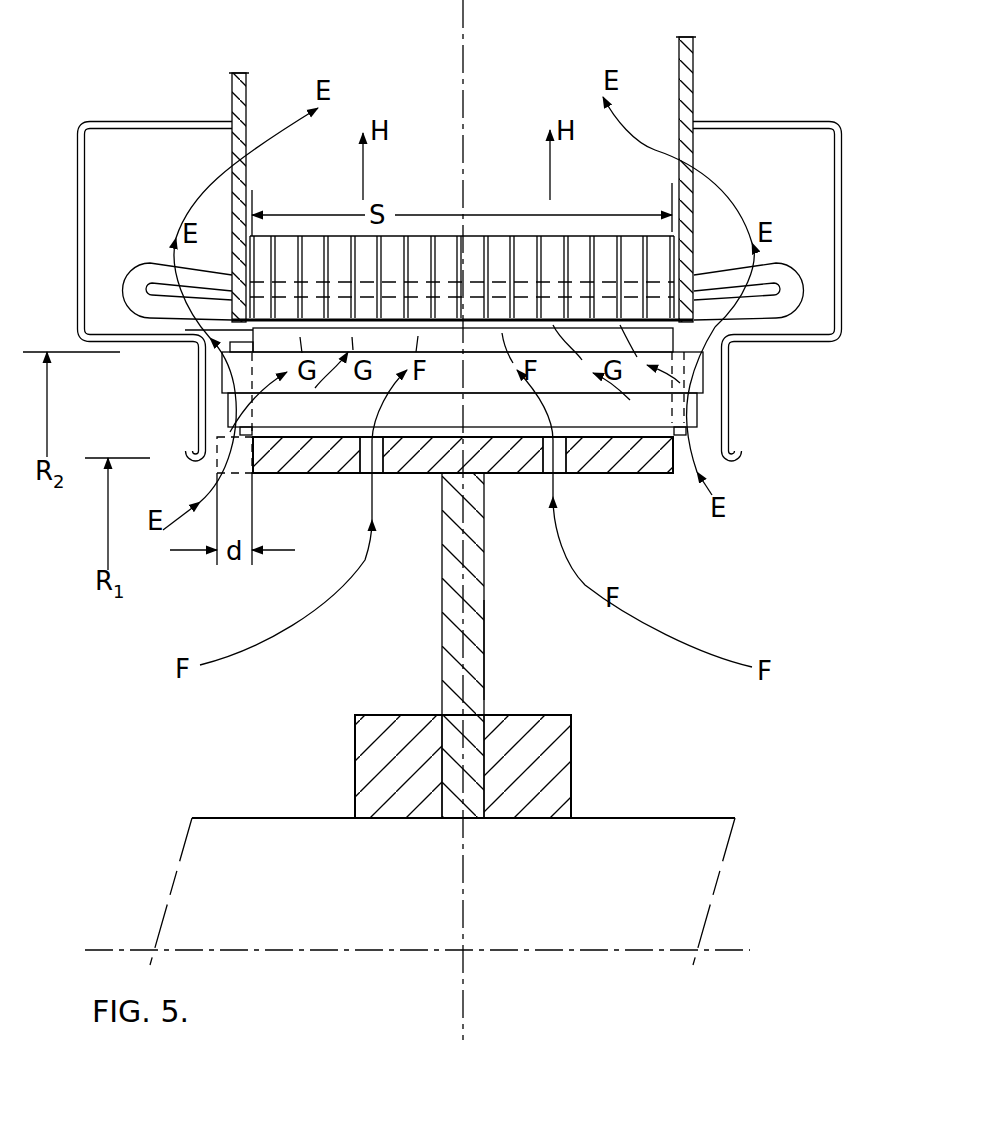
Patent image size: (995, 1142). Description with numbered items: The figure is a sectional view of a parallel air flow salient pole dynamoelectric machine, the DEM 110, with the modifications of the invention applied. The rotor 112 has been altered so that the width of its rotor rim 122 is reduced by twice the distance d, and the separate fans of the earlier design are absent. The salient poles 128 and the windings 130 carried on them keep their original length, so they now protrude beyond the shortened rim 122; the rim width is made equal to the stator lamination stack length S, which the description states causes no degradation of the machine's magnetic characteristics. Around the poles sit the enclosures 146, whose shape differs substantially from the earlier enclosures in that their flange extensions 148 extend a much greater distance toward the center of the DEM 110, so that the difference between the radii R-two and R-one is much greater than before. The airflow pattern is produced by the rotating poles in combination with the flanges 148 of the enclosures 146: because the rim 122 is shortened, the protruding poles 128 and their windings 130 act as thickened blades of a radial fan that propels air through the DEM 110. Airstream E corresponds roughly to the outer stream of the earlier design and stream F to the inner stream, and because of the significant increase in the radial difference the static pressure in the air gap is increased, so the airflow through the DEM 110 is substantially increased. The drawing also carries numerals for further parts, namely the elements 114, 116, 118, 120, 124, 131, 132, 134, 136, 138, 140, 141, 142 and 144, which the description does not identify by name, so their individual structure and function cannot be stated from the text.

The DEM 110 is at (747, 622).
The rotor 112 is at (487, 655).
The space within housing 114 is at (737, 233).
The body 116 is at (622, 818).
The hub 118 is at (542, 715).
The shaft portion 120 is at (485, 575).
The rotor rim 122 is at (633, 474).
The openings in disc 124 is at (380, 476).
The salient poles 128 is at (660, 417).
The windings 130 is at (703, 362).
The lip 131 is at (185, 333).
The openings in plate 132 is at (480, 328).
The upper region 134 is at (610, 32).
The frame 136 is at (252, 192).
The wall 138 is at (246, 166).
The screen 140 is at (500, 236).
The housing wall 141 is at (842, 237).
The fins 142 is at (617, 236).
The loops 144 is at (140, 266).
The enclosures 146 is at (85, 190).
The flange extensions 148 is at (202, 400).